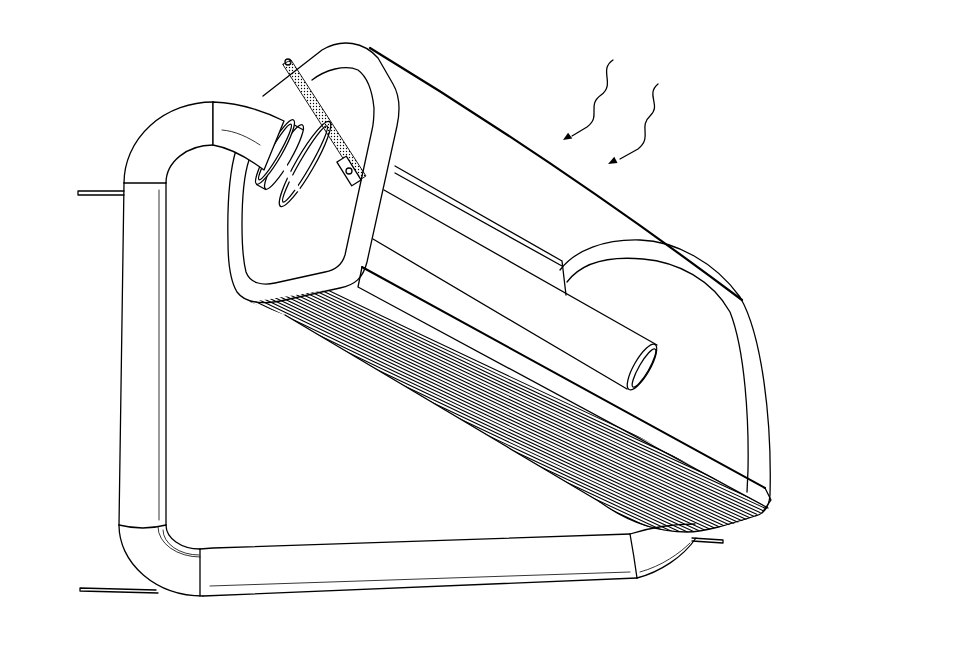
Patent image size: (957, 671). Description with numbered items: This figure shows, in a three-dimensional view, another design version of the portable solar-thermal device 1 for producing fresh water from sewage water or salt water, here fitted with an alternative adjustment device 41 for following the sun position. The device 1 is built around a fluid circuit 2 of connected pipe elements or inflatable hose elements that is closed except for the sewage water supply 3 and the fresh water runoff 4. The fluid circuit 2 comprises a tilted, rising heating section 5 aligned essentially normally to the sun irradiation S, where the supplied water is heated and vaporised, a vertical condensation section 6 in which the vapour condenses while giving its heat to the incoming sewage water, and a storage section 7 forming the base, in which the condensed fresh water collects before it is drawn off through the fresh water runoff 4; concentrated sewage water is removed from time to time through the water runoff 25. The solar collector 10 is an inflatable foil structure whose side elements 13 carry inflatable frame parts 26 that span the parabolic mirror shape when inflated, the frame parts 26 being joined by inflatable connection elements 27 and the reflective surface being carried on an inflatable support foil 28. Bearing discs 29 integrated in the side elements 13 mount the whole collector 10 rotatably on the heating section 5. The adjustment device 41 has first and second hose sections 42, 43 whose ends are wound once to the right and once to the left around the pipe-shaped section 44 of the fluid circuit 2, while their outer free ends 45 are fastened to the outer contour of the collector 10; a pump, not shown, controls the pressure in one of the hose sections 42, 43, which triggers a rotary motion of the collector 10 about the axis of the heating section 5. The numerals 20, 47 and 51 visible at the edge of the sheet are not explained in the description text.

The solar-thermal device 1 is at (140, 89).
The fluid circuit 2 is at (172, 451).
The sewage water supply 3 is at (105, 191).
The fresh water runoff 4 is at (104, 588).
The heating section 5 is at (510, 282).
The condensation section 6 is at (126, 366).
The storage section 7 is at (397, 550).
The solar collector 10 is at (790, 376).
The side elements 13 is at (327, 262).
The element of adjacent figure 20 is at (483, 643).
The water runoff 25 is at (701, 545).
The inflatable frame parts 26 is at (366, 56).
The inflatable connection elements 27 is at (440, 313).
The inflatable support foil 28 is at (503, 423).
The bearing discs 29 is at (278, 208).
The adjustment device 41 is at (274, 118).
The first hose section 42 is at (296, 82).
The second hose section 43 is at (353, 160).
The pipe-shaped section 44 is at (258, 150).
The outer free ends 45 is at (287, 61).
The element of adjacent figure 47 is at (360, 670).
The element of adjacent figure 51 is at (394, 647).
The sun irradiation S is at (598, 86).